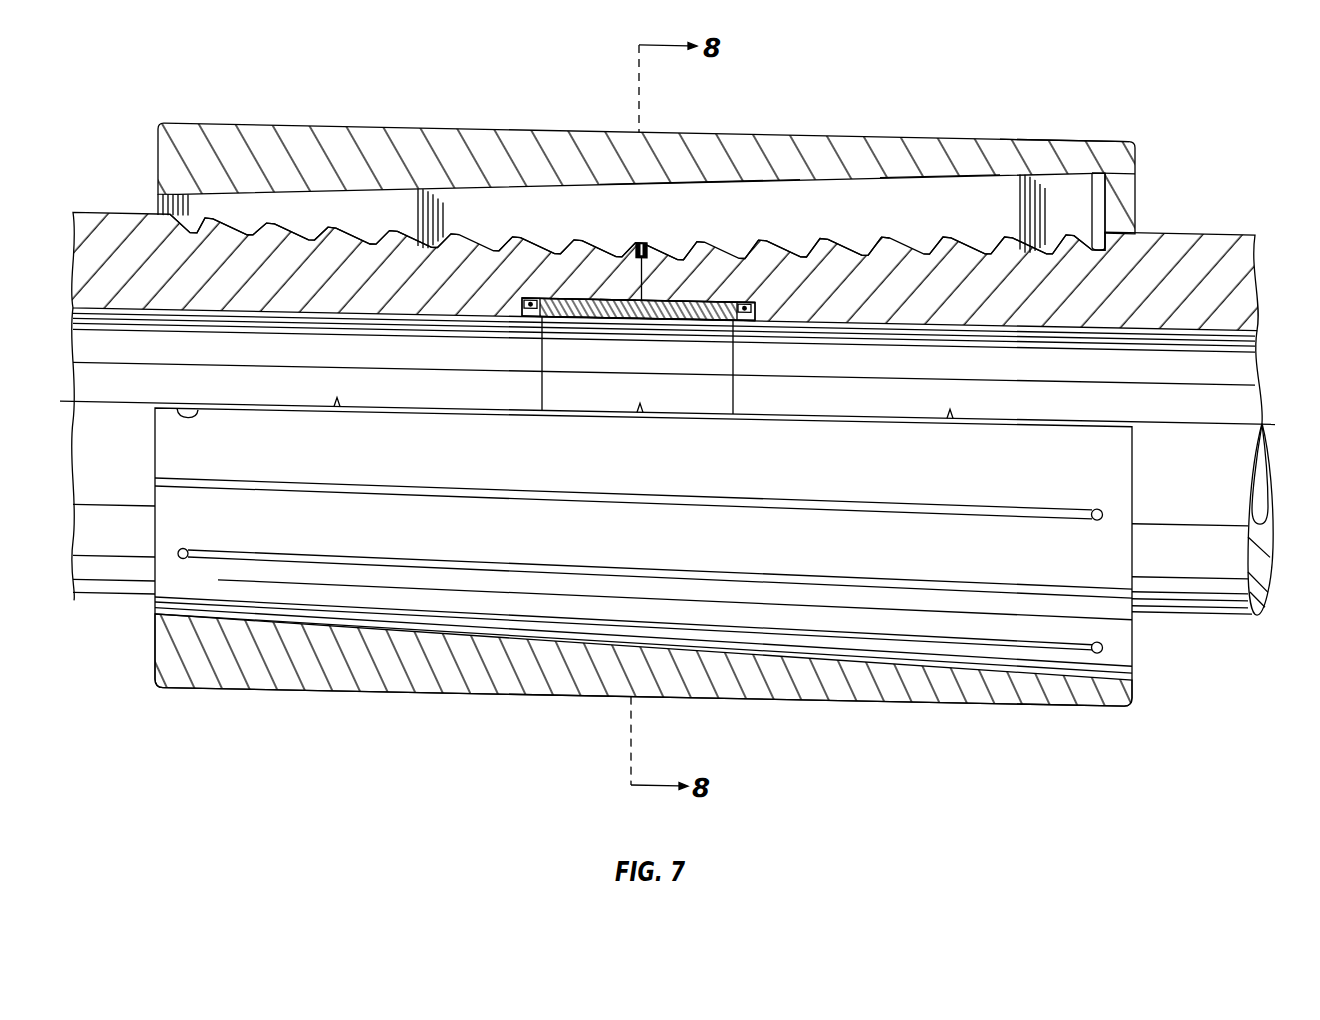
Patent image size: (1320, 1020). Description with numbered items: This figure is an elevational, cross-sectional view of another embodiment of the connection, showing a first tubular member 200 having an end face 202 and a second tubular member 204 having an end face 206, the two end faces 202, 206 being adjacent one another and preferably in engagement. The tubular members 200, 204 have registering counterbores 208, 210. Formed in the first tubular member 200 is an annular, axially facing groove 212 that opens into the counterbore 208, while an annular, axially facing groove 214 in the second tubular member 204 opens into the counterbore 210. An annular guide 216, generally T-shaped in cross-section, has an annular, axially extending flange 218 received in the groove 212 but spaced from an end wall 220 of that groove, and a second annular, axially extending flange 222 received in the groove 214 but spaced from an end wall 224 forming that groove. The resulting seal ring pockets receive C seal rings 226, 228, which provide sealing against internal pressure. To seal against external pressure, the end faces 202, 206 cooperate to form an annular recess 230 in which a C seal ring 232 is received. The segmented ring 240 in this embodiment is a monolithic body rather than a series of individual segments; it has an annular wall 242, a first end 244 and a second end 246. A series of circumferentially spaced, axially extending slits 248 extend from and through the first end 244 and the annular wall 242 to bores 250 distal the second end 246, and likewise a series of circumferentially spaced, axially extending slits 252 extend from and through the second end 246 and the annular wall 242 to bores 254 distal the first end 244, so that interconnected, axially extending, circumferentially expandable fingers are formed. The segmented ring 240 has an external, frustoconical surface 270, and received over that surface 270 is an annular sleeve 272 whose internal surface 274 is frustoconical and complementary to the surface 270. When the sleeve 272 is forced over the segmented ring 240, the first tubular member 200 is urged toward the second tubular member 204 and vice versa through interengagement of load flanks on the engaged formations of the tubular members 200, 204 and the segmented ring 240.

The first tubular member 200 is at (106, 194).
The end face 202 is at (646, 278).
The second tubular member 204 is at (1236, 178).
The end face 206 is at (633, 278).
The counterbore 208 is at (545, 288).
The counterbore 210 is at (733, 241).
The annular, axially facing groove 212 is at (508, 230).
The annular, axially facing groove 214 is at (738, 284).
The annular guide 216 is at (639, 322).
The annular, axially extending flange 218 is at (532, 310).
The end wall 220 is at (525, 287).
The second annular, axially extending flange 222 is at (748, 306).
The end wall 224 is at (770, 285).
The C seal ring 226 is at (522, 297).
The C seal ring 228 is at (762, 297).
The annular recess 230 is at (655, 237).
The C seal ring 232 is at (637, 232).
The segmented ring 240 is at (323, 200).
The annular wall 242 is at (805, 460).
The first end 244 is at (153, 561).
The second end 246 is at (1133, 623).
The slits 248 is at (260, 480).
The bores 250 is at (1094, 499).
The slits 252 is at (892, 570).
The bores 254 is at (157, 605).
The external, frustoconical surface 270 is at (697, 167).
The annular sleeve 272 is at (1028, 100).
The internal surface 274 is at (922, 164).